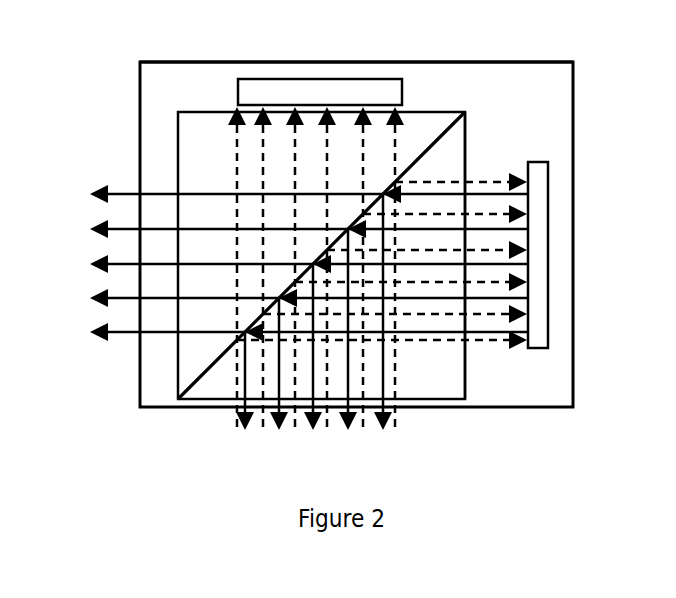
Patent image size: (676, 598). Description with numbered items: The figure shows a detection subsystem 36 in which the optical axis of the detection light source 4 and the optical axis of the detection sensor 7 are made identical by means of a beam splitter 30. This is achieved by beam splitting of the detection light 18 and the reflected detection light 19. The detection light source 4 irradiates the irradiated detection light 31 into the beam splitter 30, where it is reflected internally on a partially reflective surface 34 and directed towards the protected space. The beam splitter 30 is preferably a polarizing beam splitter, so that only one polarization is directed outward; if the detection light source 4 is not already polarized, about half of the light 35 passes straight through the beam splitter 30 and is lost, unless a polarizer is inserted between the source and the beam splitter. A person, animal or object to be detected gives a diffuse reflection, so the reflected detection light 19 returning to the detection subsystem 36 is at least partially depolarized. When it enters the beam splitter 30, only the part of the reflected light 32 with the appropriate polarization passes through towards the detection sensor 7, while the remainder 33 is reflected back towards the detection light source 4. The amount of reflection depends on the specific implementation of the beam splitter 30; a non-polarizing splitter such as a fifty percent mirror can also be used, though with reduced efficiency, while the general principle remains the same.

The beam splitter 30 is at (138, 119).
The detection subsystem 36 is at (375, 62).
The detection sensor 7 is at (262, 79).
The partially transmitted reflected detection light 32 is at (395, 150).
The irradiated detection light 31 is at (465, 332).
The partially reflective surface 34 is at (213, 364).
The detection light source 4 is at (550, 263).
The reflected detection light 19 is at (237, 372).
The partially reflected returning light 33 is at (475, 180).
The light passing straight through 35 is at (155, 333).
The detection light 18 is at (380, 370).